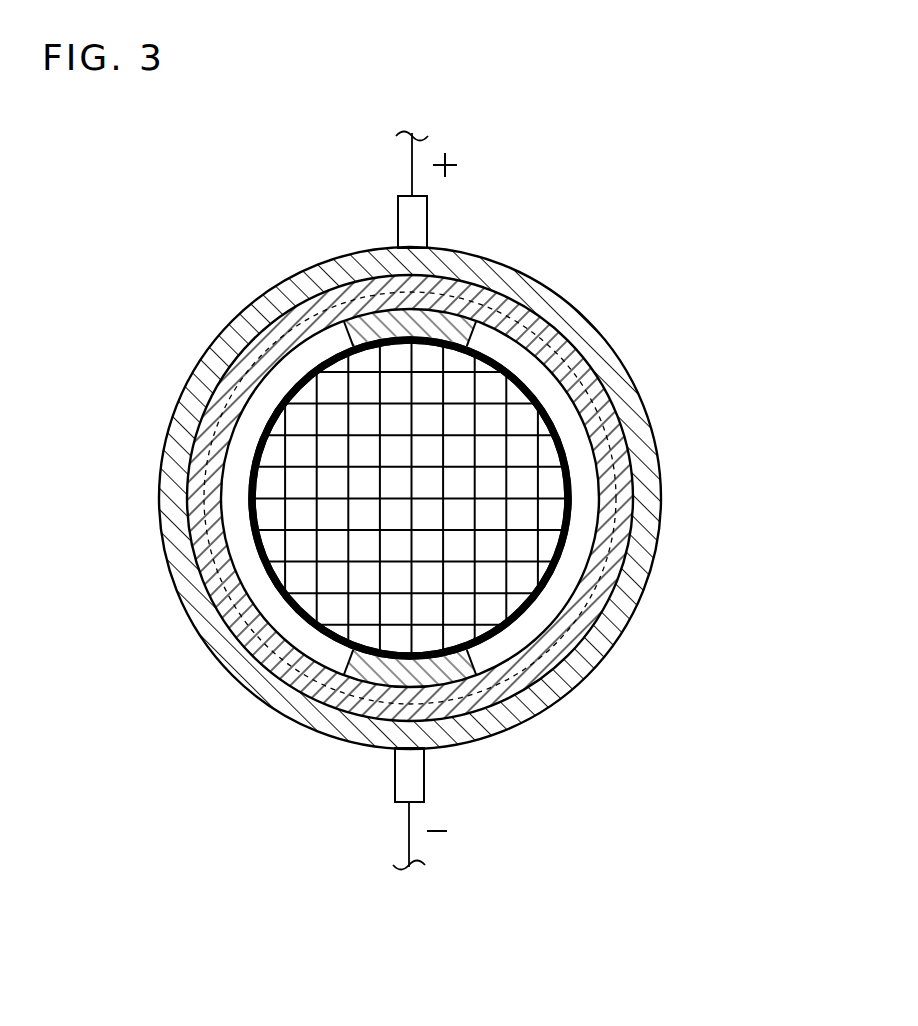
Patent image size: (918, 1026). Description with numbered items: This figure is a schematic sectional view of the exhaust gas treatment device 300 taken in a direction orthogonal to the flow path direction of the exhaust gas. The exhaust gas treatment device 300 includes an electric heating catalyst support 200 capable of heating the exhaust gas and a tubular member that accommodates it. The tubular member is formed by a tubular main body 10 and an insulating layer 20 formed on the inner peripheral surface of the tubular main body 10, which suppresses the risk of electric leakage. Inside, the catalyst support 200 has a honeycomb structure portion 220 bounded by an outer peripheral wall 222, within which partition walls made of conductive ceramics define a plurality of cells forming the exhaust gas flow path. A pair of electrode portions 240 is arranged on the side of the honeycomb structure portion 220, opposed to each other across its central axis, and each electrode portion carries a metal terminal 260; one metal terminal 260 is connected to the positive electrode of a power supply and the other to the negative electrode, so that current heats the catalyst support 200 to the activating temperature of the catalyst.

The tubular main body 10 is at (220, 350).
The insulating layer 20 is at (220, 403).
The electric heating catalyst support 200 is at (727, 730).
The honeycomb structure portion 220 is at (392, 522).
The outer peripheral wall 222 is at (273, 588).
The electrode portions 240 is at (450, 325).
The metal terminals 260 is at (418, 221).
The exhaust gas treatment device 300 is at (705, 226).